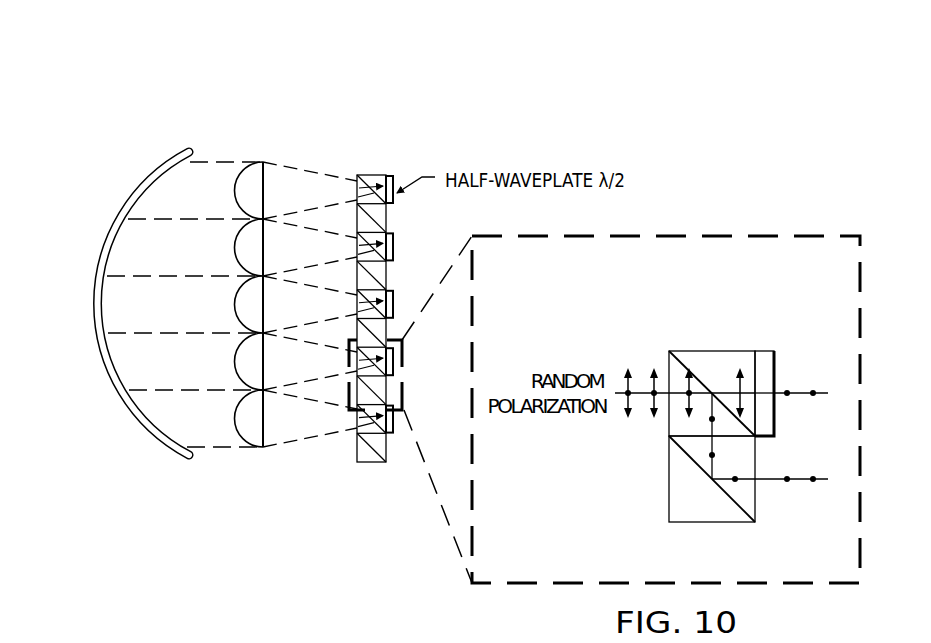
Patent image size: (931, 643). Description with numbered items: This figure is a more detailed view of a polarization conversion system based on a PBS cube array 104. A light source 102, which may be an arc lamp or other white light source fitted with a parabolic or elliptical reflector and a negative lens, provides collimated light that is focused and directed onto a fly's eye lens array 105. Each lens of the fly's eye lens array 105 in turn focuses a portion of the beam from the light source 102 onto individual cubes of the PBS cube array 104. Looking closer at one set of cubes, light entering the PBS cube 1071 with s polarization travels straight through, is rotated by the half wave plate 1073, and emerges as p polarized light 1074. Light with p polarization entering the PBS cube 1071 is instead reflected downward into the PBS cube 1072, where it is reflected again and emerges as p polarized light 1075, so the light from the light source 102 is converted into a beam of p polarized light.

The light source 102 is at (160, 444).
The fly's eye lens array 105 is at (236, 183).
The PBS cube array 104 is at (372, 175).
The PBS cube 1071 is at (703, 358).
The PBS cube 1072 is at (702, 513).
The half wave plate 1073 is at (766, 358).
The p polarized light 1074 is at (813, 400).
The p polarized light 1075 is at (813, 486).